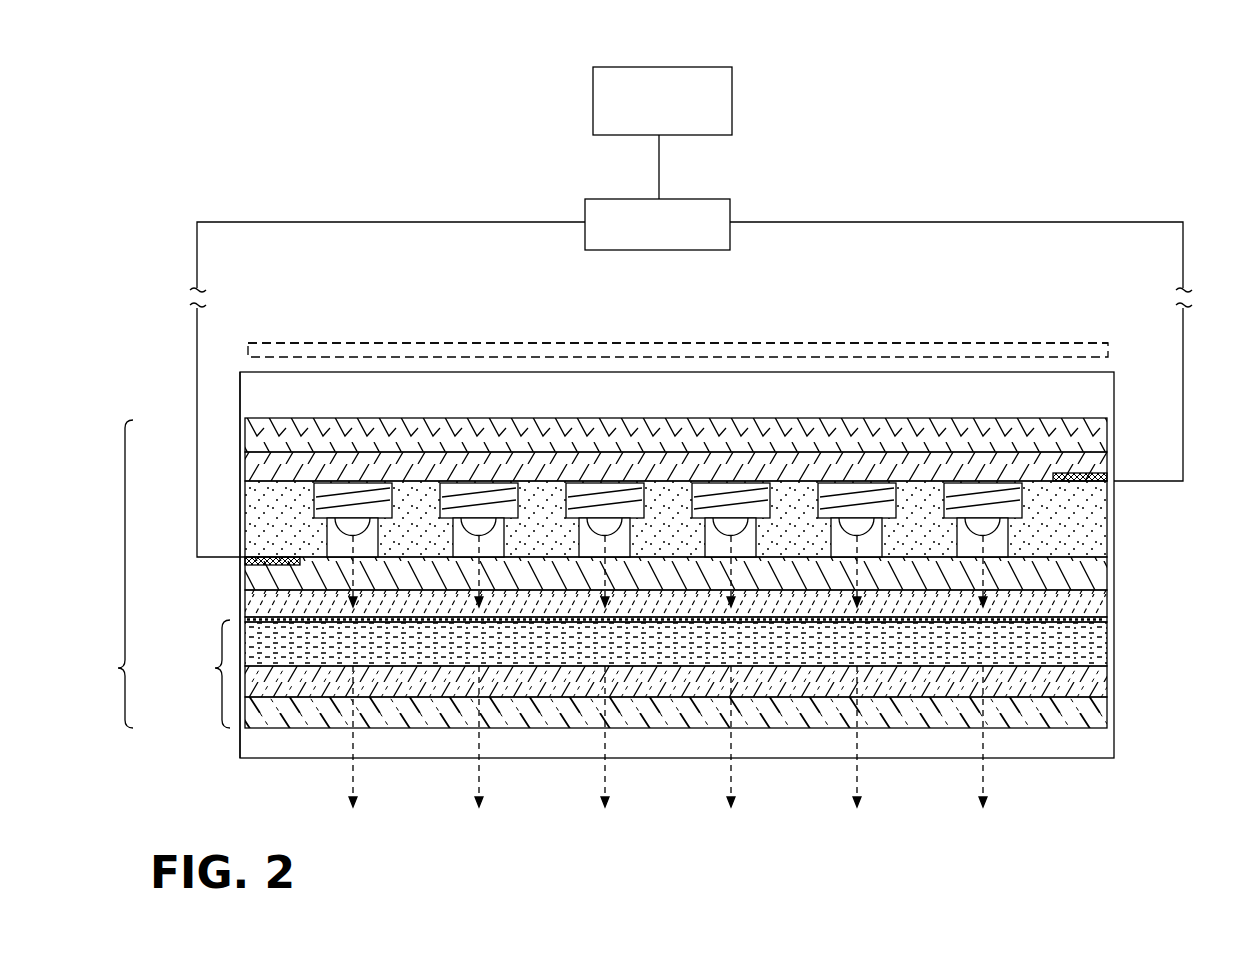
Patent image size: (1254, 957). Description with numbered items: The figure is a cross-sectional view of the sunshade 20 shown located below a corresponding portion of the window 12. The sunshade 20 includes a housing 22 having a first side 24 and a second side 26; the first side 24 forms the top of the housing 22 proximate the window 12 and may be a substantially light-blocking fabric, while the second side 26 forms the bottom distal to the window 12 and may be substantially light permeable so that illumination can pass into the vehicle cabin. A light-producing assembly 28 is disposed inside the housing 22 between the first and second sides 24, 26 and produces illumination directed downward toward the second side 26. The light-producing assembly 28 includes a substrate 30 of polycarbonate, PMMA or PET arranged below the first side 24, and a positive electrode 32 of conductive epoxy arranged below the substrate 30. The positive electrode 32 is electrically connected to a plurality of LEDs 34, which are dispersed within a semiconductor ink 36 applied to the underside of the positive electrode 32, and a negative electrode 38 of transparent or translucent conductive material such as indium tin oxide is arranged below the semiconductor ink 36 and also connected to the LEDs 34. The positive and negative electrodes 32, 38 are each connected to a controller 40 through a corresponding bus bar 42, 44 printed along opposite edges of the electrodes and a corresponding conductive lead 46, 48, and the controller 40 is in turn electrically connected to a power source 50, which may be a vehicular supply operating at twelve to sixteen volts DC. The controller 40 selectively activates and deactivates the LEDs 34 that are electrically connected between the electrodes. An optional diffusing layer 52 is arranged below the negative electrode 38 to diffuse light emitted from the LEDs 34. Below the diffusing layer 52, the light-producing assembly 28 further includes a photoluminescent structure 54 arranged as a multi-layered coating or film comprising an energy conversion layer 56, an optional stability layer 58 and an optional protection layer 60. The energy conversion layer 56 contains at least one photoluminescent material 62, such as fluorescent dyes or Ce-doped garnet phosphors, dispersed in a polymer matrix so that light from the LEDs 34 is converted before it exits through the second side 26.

The window 12 is at (1080, 350).
The sunshade 20 is at (1016, 111).
The housing 22 is at (240, 416).
The first side 24 is at (1016, 372).
The second side 26 is at (1068, 758).
The light-producing assembly 28 is at (106, 574).
The substrate 30 is at (1107, 435).
The positive electrode 32 is at (245, 463).
The LEDs 34 is at (480, 497).
The semiconductor ink 36 is at (1095, 504).
The negative electrode 38 is at (1107, 568).
The controller 40 is at (720, 199).
The bus bar 42 is at (1085, 477).
The bus bar 44 is at (265, 566).
The conductive lead 46 is at (1183, 385).
The conductive lead 48 is at (197, 385).
The power source 50 is at (676, 67).
The diffusing layer 52 is at (1090, 603).
The photoluminescent structure 54 is at (202, 674).
The energy conversion layer 56 is at (1107, 645).
The stability layer 58 is at (1107, 677).
The protection layer 60 is at (1107, 712).
The photoluminescent material 62 is at (1090, 620).